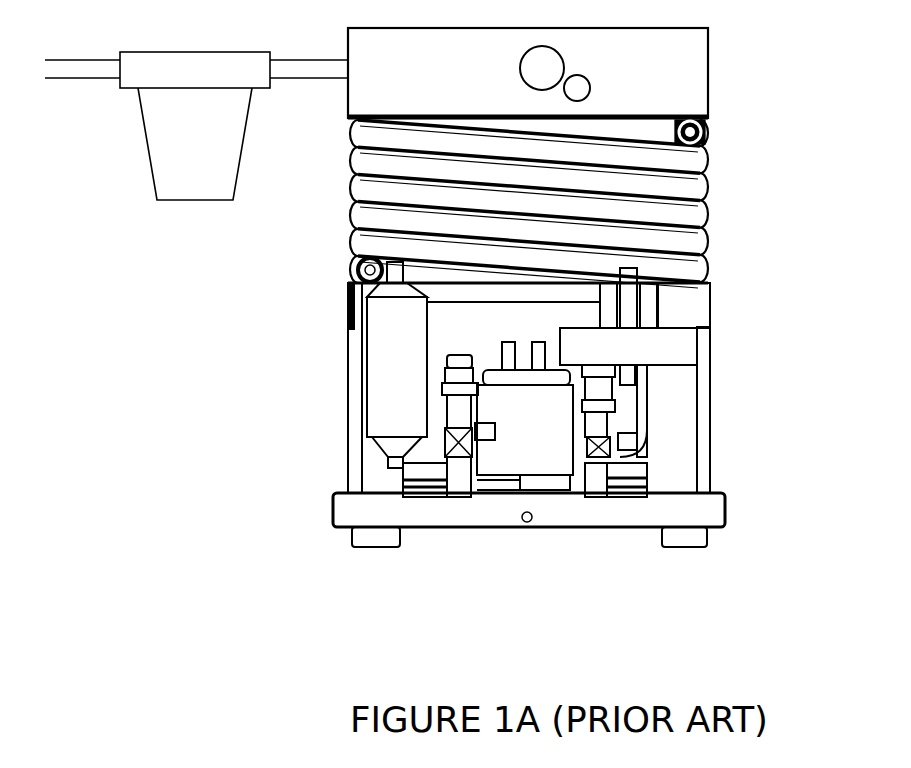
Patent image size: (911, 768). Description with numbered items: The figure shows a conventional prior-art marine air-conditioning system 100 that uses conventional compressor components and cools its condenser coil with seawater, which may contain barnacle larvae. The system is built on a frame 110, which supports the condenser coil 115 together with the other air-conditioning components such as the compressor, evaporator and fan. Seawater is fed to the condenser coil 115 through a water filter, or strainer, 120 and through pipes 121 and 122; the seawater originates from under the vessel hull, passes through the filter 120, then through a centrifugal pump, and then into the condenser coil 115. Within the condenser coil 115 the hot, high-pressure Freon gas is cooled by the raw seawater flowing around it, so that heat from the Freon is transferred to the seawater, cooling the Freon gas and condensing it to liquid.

The marine air-conditioning system 100 is at (185, 407).
The frame 110 is at (708, 78).
The condenser coil 115 is at (703, 210).
The water filter 120 is at (145, 140).
The pipe 121 is at (63, 60).
The pipe 122 is at (308, 60).